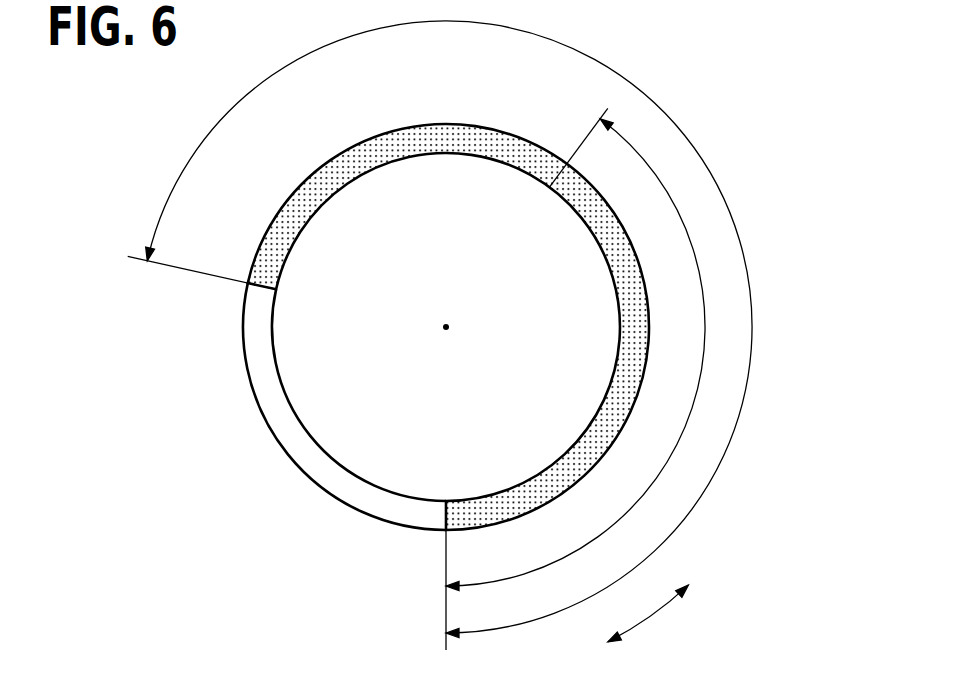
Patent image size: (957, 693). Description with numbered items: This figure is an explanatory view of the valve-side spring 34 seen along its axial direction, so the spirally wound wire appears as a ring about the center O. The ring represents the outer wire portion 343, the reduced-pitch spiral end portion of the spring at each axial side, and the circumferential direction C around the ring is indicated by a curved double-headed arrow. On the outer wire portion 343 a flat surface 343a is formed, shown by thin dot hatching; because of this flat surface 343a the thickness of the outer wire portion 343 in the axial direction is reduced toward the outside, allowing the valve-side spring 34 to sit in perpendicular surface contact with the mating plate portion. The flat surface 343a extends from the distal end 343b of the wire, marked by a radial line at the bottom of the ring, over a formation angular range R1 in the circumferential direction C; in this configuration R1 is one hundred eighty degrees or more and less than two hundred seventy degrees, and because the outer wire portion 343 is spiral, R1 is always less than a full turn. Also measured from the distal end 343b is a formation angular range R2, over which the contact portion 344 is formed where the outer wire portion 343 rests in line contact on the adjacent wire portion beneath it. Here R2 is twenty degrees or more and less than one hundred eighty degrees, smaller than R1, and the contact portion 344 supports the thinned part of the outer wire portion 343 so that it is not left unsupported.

The valve-side spring 34 is at (477, 387).
The outer wire portion 343 is at (523, 387).
The flat surface 343a is at (637, 298).
The distal end 343b is at (443, 513).
The contact portion 344 is at (344, 406).
The rotation center of roller O is at (446, 327).
The formation angular range of the flat surface R1 is at (737, 224).
The formation angular range of the contact portion R2 is at (685, 423).
The circumferential direction C is at (648, 618).